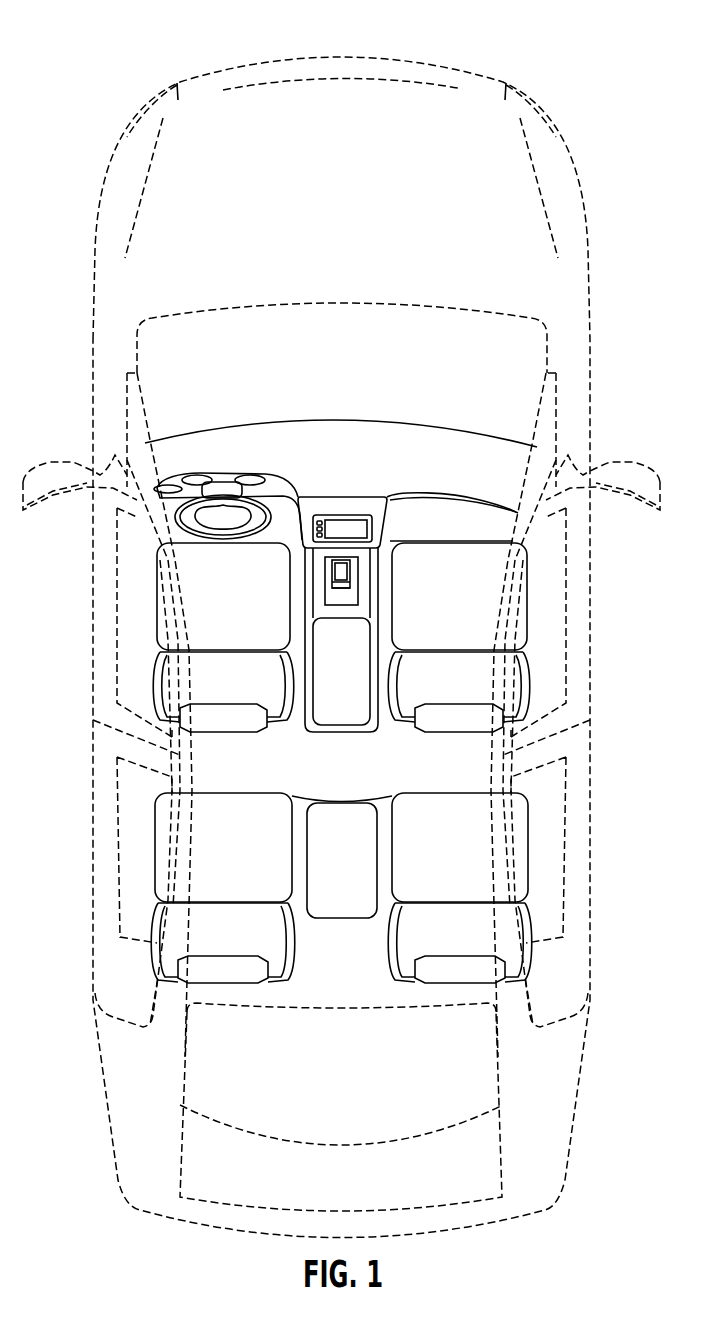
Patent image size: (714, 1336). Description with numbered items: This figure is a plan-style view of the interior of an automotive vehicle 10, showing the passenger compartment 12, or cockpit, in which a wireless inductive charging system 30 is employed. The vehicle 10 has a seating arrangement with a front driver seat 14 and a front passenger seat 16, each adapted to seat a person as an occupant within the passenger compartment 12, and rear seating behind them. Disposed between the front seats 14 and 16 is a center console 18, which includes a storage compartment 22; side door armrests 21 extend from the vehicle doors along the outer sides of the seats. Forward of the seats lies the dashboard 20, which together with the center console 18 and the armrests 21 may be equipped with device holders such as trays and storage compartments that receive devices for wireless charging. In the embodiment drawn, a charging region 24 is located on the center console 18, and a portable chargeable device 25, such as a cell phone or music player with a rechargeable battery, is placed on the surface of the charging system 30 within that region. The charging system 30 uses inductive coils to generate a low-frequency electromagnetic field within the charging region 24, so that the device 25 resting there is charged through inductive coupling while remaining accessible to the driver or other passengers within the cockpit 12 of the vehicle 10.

The automotive vehicle 10 is at (548, 63).
The passenger compartment 12 is at (461, 508).
The front driver seat 14 is at (218, 620).
The front passenger seat 16 is at (447, 620).
The center console 18 is at (468, 569).
The dashboard 20 is at (481, 510).
The side door armrests 21 is at (127, 650).
The storage compartment 22 is at (332, 690).
The charging region 24 is at (478, 484).
The portable chargeable device 25 is at (340, 567).
The wireless inductive charging system 30 is at (362, 582).